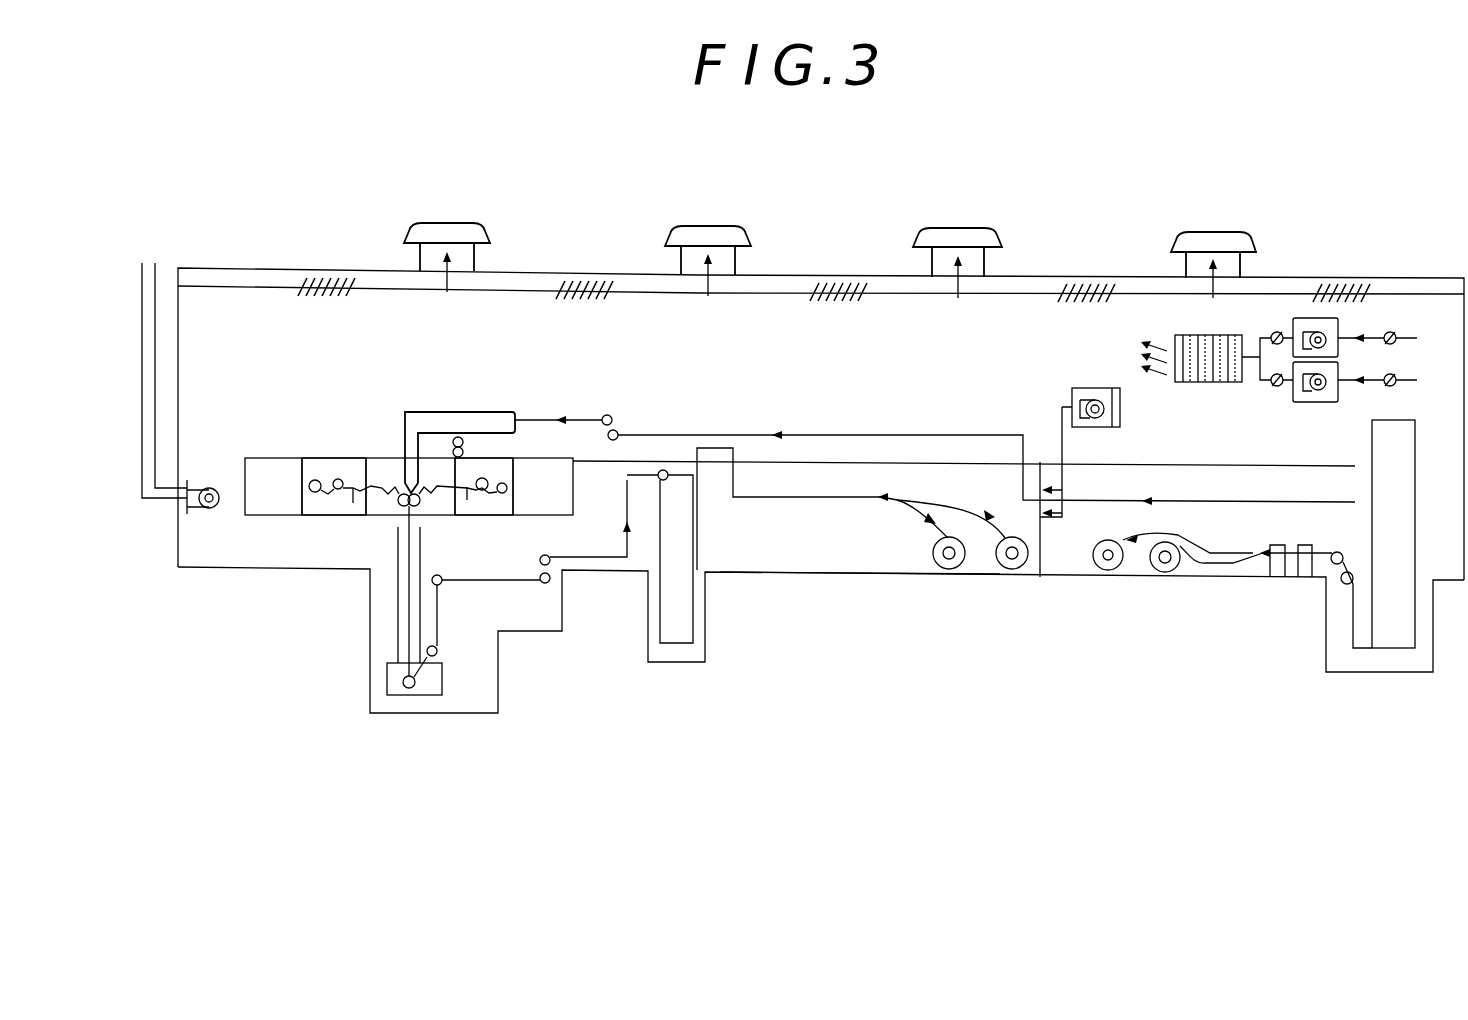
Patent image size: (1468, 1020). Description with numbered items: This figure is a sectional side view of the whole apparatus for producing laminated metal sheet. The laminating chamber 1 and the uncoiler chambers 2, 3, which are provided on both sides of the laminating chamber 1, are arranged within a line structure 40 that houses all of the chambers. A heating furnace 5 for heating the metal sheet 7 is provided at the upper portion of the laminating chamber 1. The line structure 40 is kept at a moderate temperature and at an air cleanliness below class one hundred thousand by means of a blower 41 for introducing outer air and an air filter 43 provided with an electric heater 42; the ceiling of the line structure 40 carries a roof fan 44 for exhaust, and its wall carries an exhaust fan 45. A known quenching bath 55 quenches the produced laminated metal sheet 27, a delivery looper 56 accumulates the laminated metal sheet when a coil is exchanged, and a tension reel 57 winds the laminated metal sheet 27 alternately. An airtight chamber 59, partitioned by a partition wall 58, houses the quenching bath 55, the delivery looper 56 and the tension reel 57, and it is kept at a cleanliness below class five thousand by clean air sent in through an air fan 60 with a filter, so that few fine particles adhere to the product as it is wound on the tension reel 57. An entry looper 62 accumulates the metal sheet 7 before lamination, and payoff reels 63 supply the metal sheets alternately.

The laminating chamber 1 is at (367, 456).
The uncoiler chamber 2 is at (313, 456).
The uncoiler chamber 3 is at (468, 517).
The heating furnace 5 is at (428, 411).
The metal sheet 7 is at (572, 420).
The laminated metal sheet 27 is at (406, 629).
The line structure 40 is at (880, 320).
The blower 41 is at (1303, 318).
The electric heater 42 is at (1180, 384).
The air filter 43 is at (1228, 384).
The roof fan 44 is at (435, 228).
The exhaust fan 45 is at (212, 512).
The quenching bath 55 is at (427, 688).
The delivery looper 56 is at (673, 640).
The tension reel 57 is at (950, 570).
The partition wall 58 is at (1040, 558).
The airtight chamber 59 is at (824, 578).
The air fan 60 is at (1090, 390).
The entry looper 62 is at (1385, 634).
The payoff reels 63 is at (1118, 568).